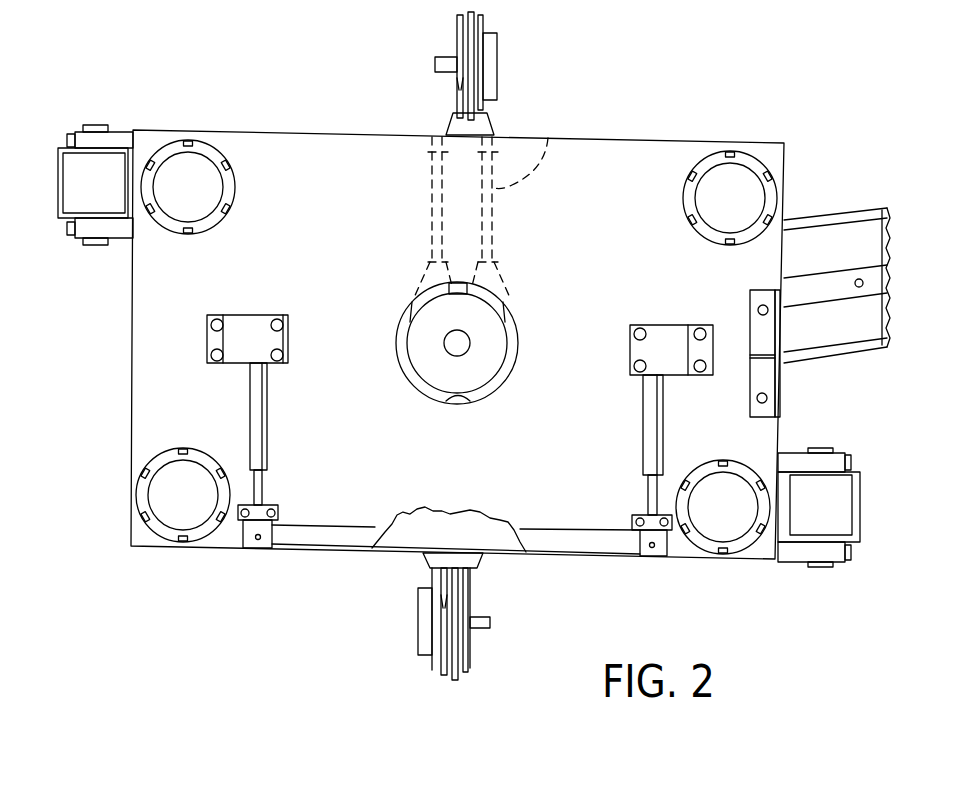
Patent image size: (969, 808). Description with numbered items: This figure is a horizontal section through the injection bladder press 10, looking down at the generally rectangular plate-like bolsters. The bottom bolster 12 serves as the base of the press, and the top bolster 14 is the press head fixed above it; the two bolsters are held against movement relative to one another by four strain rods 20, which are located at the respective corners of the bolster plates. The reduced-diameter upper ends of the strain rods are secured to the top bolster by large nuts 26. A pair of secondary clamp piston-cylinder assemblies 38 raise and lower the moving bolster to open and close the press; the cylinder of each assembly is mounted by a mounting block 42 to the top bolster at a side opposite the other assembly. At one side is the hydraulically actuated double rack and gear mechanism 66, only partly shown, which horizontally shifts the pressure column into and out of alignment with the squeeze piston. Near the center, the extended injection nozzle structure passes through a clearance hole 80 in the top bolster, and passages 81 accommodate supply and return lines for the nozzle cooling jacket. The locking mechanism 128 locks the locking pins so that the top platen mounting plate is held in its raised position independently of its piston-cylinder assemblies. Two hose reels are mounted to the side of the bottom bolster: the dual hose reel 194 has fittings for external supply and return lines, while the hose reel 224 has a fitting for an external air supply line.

The injection bladder press 10 is at (255, 565).
The bottom bolster 12 is at (400, 548).
The top bolster 14 is at (232, 126).
The strain rods 20 is at (696, 168).
The large nuts 26 is at (692, 534).
The secondary clamp piston-cylinder assemblies 38 is at (132, 208).
The mounting block 42 is at (791, 454).
The double rack and gear mechanism 66 is at (829, 210).
The clearance hole 80 is at (462, 403).
The passages 81 is at (546, 138).
The locking mechanism 128 is at (242, 428).
The hose reel 194 is at (474, 650).
The hose reel 224 is at (498, 45).